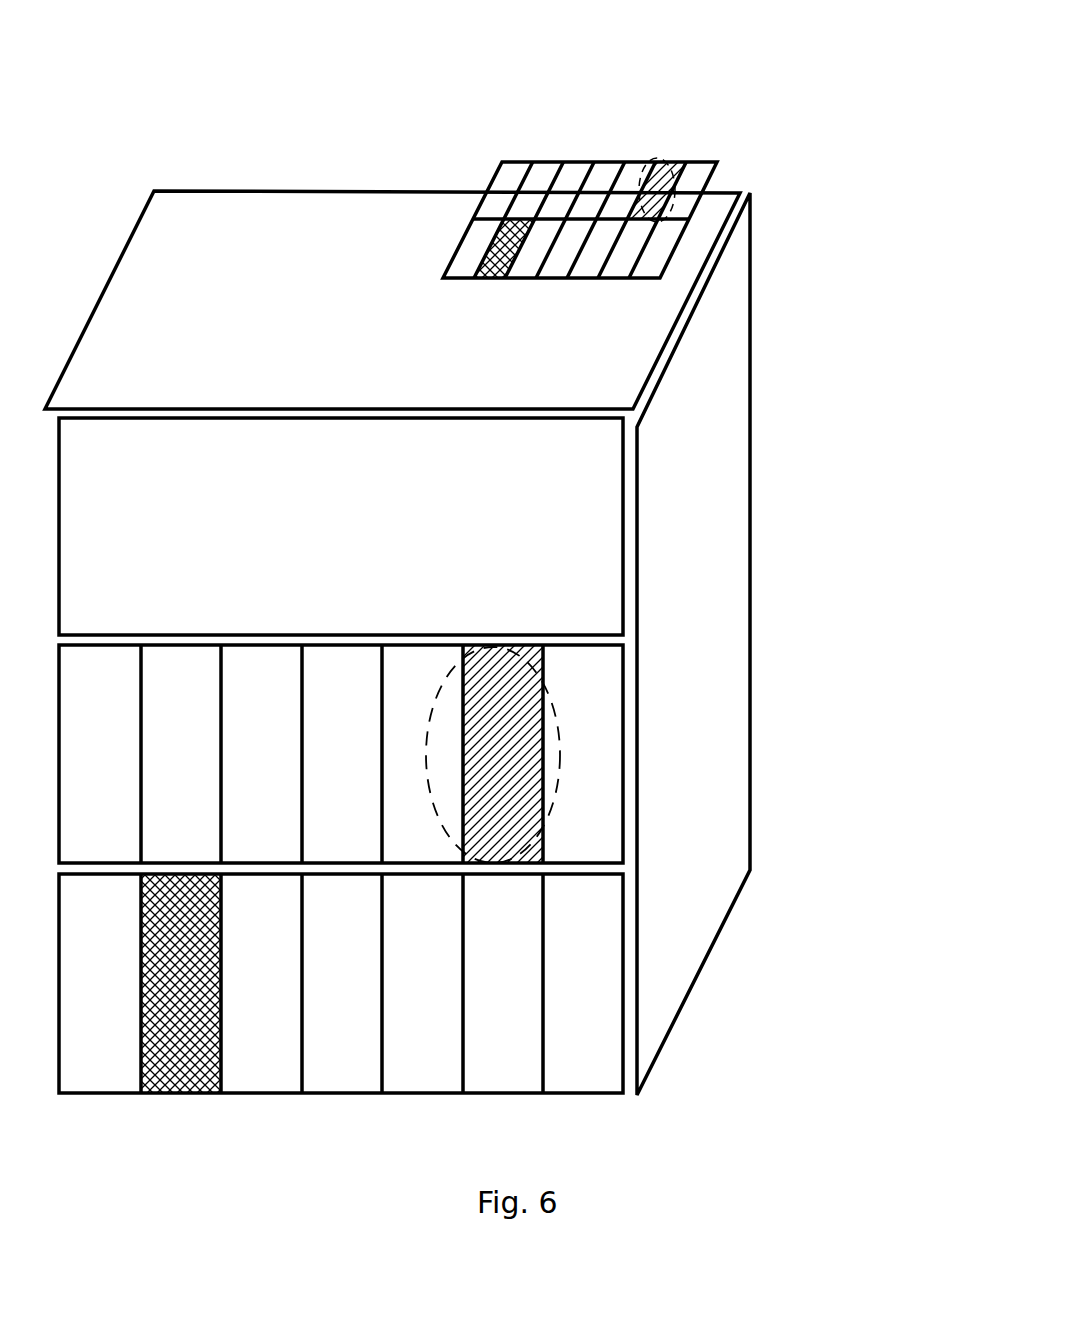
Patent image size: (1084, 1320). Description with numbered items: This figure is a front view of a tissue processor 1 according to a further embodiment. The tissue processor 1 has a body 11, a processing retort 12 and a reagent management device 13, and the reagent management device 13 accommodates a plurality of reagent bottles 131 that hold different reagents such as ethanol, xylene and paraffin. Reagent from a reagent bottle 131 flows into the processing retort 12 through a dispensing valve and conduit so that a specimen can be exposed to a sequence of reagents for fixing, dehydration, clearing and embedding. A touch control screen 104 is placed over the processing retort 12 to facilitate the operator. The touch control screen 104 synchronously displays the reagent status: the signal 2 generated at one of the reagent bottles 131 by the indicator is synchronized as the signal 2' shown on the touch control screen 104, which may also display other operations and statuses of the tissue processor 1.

The tissue processor 1 is at (215, 108).
The body 11 is at (730, 395).
The processing retort 12 is at (392, 359).
The reagent management device 13 is at (517, 781).
The reagent bottle 131 is at (603, 1002).
The signal 2 is at (641, 666).
The signal displayed on touch control panel 2' is at (717, 145).
The touch control screen 104 is at (605, 155).